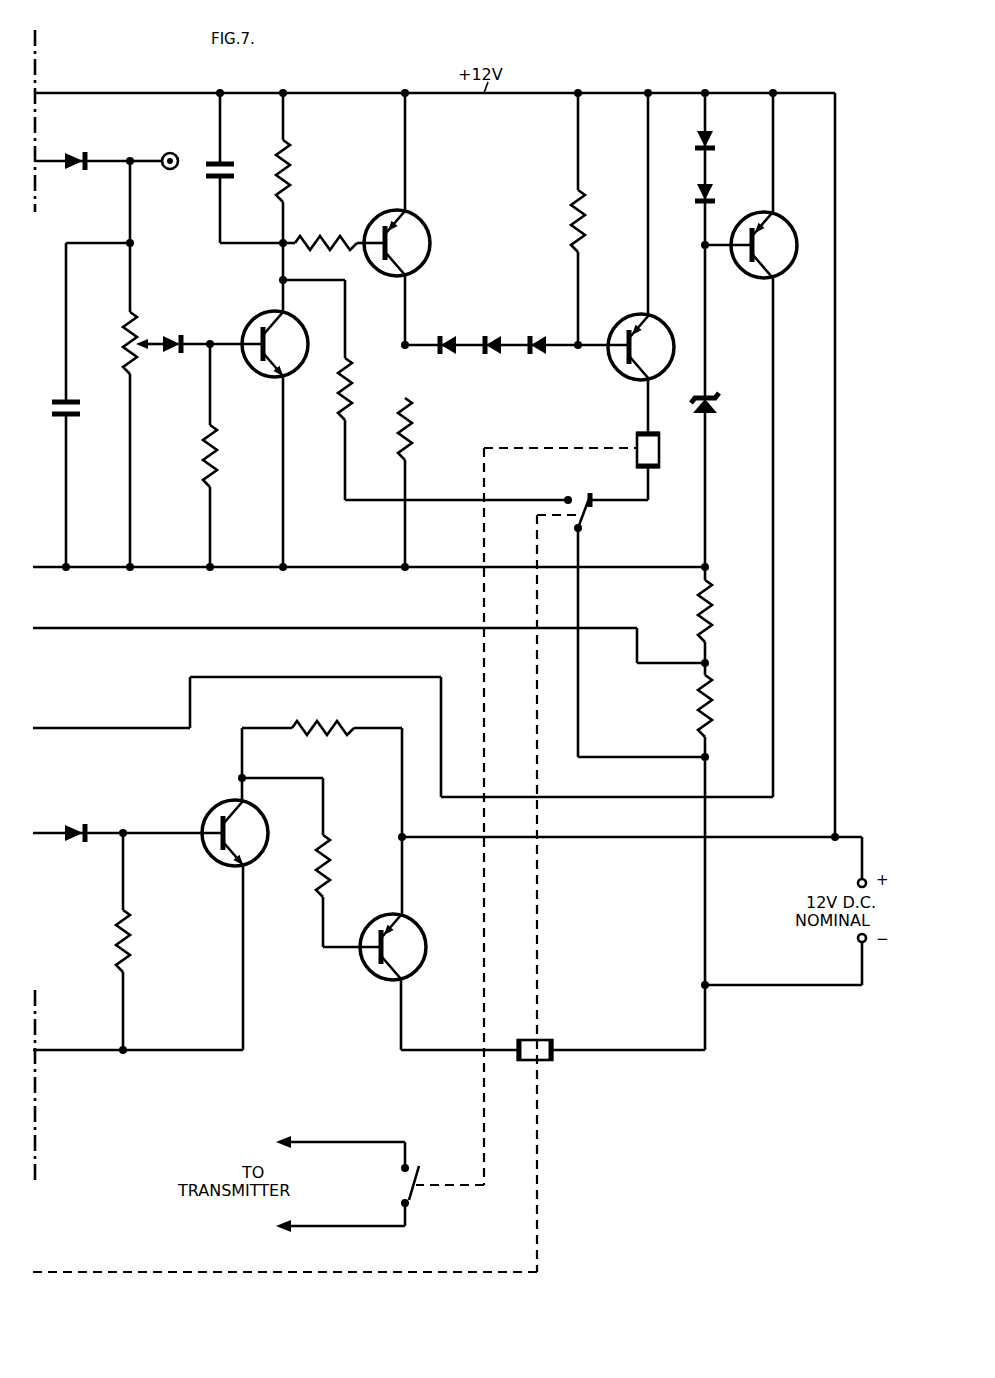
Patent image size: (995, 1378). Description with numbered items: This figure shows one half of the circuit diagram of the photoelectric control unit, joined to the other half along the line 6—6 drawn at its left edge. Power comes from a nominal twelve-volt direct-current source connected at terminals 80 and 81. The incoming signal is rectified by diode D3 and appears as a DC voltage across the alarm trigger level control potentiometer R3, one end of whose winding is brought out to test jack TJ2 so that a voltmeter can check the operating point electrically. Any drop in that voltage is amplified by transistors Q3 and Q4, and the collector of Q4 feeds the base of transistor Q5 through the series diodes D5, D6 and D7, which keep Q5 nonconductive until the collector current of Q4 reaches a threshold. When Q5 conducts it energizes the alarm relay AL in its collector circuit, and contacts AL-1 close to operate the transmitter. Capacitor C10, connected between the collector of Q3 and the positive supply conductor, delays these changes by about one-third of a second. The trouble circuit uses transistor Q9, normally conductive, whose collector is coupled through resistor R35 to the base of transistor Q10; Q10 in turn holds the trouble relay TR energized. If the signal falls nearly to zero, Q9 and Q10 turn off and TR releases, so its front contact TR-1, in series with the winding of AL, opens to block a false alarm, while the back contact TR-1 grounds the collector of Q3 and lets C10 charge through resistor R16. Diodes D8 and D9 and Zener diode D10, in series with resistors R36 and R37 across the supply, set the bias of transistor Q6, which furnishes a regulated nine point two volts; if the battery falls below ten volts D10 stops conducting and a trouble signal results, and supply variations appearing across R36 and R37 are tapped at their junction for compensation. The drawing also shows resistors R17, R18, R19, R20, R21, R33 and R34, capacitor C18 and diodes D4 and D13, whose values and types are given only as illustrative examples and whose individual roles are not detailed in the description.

The line 6— 6 is at (32, 607).
The terminal 80 is at (858, 880).
The terminal 81 is at (858, 941).
The diode D3 is at (70, 154).
The test jack TJ2 is at (170, 153).
The capacitor C10 is at (233, 170).
The resistor R18 is at (284, 170).
The resistor R19 is at (334, 233).
The transistor Q4 is at (415, 228).
The resistor R21 is at (579, 213).
The diode D8 is at (712, 144).
The diode D9 is at (700, 195).
The transistor Q6 is at (752, 274).
The alarm trigger level control potentiometer R3 is at (124, 331).
The diode 1N2070 D4 is at (171, 354).
The transistor Q3 is at (254, 326).
The resistor R17 is at (205, 457).
The capacitor C18 is at (80, 417).
The resistor R16 is at (425, 390).
The resistor R20 is at (411, 425).
The diode D5 is at (445, 355).
The diode D6 is at (487, 335).
The diode D7 is at (534, 356).
The transistor Q5 is at (626, 373).
The alarm relay AL is at (659, 450).
The contact of trouble relay TR-1 is at (576, 495).
The Zener diode D10 is at (712, 403).
The resistor R36 is at (700, 605).
The resistor R37 is at (698, 705).
The resistor R34 is at (331, 712).
The resistor R35 is at (327, 862).
The transistor Q9 is at (218, 858).
The diode 1N2070 D13 is at (70, 825).
The resistor R33 is at (119, 937).
The transistor Q10 is at (370, 970).
The trouble relay TR is at (541, 1042).
The contacts of alarm relay AL-1 is at (412, 1185).